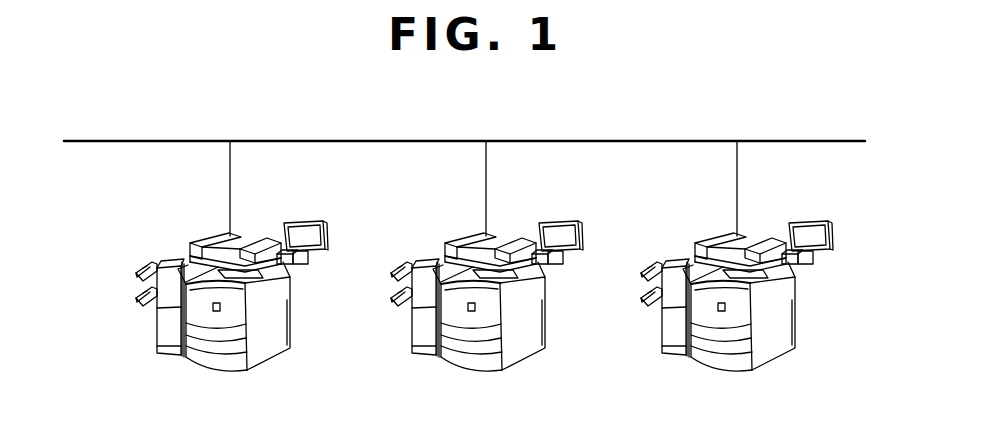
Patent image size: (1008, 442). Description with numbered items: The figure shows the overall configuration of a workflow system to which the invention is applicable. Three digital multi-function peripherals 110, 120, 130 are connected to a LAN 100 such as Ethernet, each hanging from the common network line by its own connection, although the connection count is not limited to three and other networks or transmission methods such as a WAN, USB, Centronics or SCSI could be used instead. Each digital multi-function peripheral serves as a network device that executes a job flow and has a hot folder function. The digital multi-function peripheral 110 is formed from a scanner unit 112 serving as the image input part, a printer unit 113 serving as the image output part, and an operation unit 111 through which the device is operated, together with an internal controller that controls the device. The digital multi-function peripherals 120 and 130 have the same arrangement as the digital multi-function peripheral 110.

The LAN 100 is at (350, 141).
The digital multi-function peripheral 110 is at (230, 173).
The operation unit 111 is at (305, 222).
The scanner unit 112 is at (192, 243).
The printer unit 113 is at (157, 331).
The digital multi-function peripheral 120 is at (462, 235).
The digital multi-function peripheral 130 is at (710, 235).